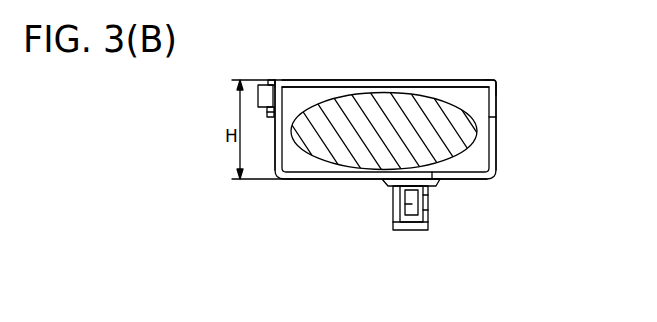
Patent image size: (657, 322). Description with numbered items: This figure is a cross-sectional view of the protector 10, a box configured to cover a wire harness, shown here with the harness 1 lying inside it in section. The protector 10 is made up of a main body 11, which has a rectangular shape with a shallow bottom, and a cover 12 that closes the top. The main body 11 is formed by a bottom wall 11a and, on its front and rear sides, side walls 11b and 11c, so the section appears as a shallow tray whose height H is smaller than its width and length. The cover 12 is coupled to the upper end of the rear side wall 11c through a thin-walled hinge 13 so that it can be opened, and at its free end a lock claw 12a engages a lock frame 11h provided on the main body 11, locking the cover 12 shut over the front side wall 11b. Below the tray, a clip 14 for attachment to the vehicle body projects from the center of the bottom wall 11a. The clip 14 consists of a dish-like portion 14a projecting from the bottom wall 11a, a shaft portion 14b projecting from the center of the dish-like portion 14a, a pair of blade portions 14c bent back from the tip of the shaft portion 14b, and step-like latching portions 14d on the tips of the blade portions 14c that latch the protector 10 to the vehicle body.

The battery cell 1 is at (428, 122).
The protector 10 is at (356, 45).
The main body 11 is at (316, 181).
The bottom wall 11a is at (337, 180).
The side wall 11b is at (271, 138).
The side wall 11c is at (497, 143).
The lock frame 11h is at (259, 93).
The cover 12 is at (393, 83).
The lock claw 12a is at (266, 110).
The thin-walled hinge 13 is at (497, 87).
The clip 14 is at (441, 246).
The dish-like portion 14a is at (437, 183).
The shaft portion 14b is at (425, 212).
The blade portion 14c is at (412, 215).
The step-like latching portion 14d is at (426, 207).